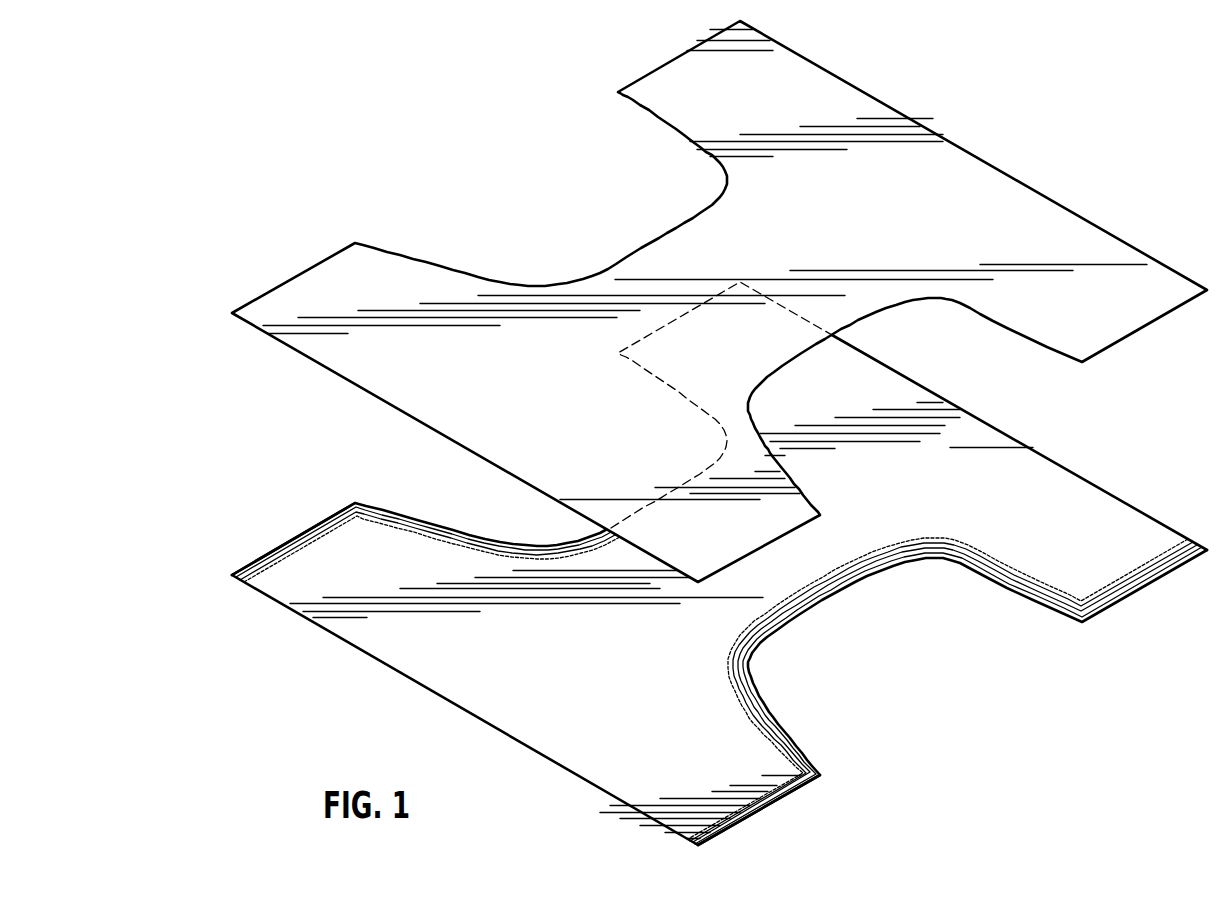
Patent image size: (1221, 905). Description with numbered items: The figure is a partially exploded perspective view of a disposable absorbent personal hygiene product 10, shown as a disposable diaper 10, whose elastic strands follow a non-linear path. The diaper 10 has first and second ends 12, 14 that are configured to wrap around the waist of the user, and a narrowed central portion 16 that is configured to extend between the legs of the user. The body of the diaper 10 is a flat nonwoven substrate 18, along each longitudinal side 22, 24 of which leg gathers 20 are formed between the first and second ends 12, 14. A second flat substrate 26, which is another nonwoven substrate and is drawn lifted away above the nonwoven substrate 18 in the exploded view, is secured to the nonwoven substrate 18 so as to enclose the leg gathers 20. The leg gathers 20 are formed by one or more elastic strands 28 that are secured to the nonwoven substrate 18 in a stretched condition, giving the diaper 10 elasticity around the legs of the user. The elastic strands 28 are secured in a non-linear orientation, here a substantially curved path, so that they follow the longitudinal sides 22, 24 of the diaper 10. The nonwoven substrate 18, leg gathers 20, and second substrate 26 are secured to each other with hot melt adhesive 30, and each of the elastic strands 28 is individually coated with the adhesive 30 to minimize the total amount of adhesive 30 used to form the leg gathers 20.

The disposable absorbent personal hygiene product 10 is at (456, 128).
The first end 12 is at (432, 690).
The second end 14 is at (1083, 477).
The narrowed central portion 16 is at (823, 593).
The flat nonwoven substrate 18 is at (549, 661).
The leg gathers 20 is at (300, 527).
The longitudinal side 22 is at (790, 796).
The longitudinal side 24 is at (255, 562).
The second flat substrate 26 is at (819, 229).
The elastic strands 28 is at (408, 518).
The hot melt adhesive 30 is at (288, 576).